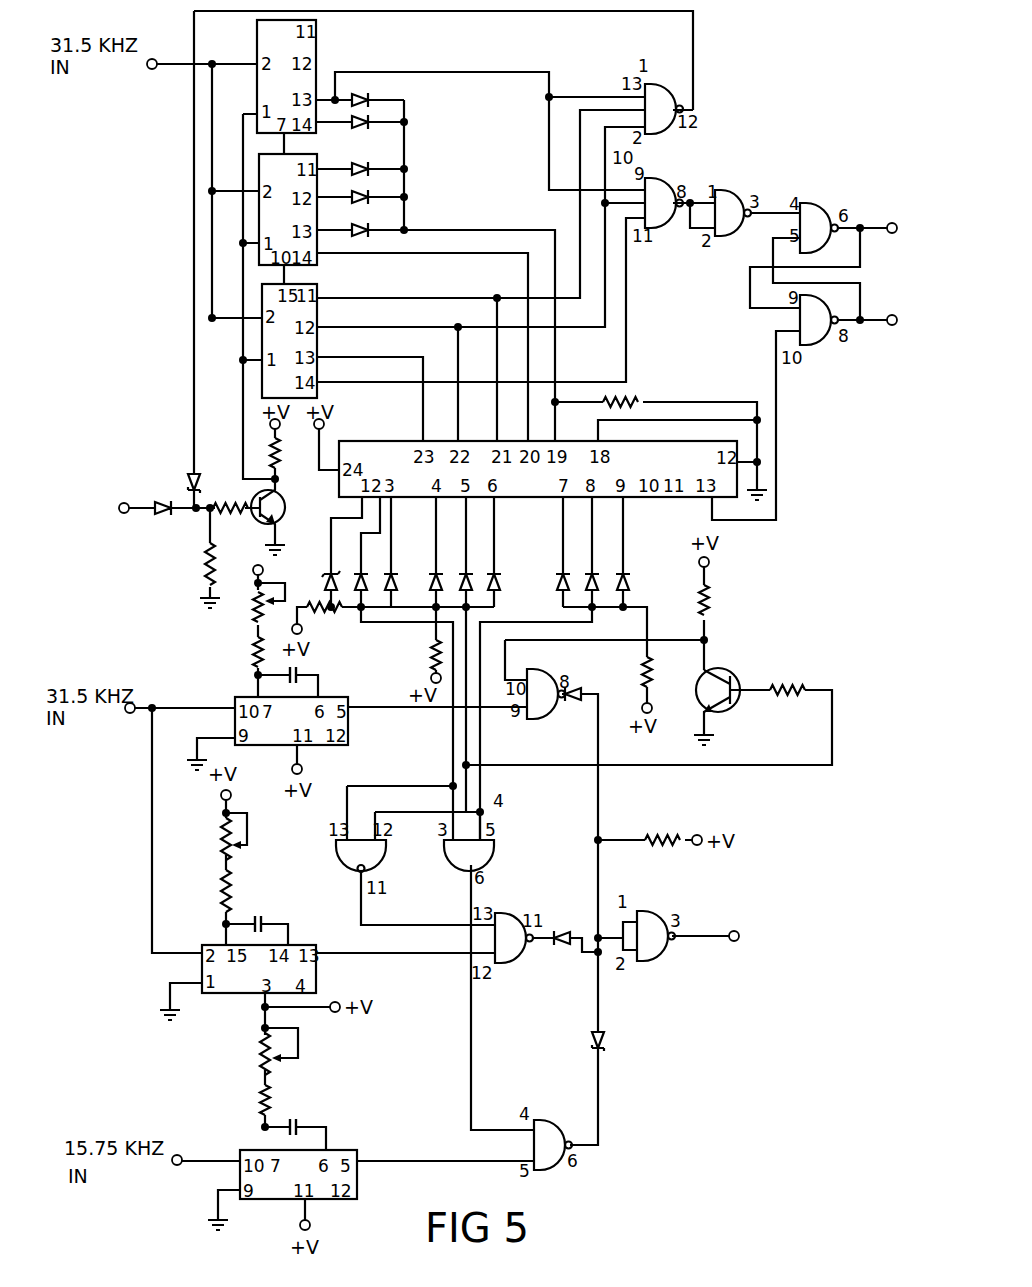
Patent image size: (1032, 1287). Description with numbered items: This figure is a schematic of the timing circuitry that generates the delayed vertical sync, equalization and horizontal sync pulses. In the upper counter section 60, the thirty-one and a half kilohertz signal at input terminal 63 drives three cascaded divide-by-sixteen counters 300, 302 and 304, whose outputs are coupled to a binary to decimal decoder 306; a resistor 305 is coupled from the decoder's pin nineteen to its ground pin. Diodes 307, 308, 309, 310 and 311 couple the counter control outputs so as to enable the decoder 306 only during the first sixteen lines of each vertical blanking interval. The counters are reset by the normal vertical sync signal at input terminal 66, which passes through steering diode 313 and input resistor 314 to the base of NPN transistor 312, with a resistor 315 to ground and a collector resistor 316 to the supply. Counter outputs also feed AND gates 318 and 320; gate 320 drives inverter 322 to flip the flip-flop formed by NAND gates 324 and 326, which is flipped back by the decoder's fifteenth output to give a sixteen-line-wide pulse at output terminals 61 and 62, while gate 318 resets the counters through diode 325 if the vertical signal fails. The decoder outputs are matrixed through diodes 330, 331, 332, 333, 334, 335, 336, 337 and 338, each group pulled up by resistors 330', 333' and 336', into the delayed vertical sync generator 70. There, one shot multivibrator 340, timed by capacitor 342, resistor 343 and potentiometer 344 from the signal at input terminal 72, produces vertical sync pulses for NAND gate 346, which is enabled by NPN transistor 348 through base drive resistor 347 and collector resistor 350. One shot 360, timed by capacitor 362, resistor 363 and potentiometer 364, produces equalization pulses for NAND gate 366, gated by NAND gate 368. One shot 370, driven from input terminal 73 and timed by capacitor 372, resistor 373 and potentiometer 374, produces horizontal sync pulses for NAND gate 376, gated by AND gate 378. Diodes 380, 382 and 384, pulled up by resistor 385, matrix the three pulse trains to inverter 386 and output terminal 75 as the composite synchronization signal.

The counter and decoder circuit 60 is at (166, 316).
The delayed vertical sync generator 70 is at (142, 662).
The output terminal 61 is at (892, 233).
The output terminal 62 is at (895, 310).
The input terminal 63 is at (150, 70).
The input terminal 66 is at (124, 503).
The input terminal 72 is at (128, 713).
The input terminal 73 is at (175, 1155).
The output terminal 75 is at (733, 931).
The divide-by-16 counter 300 is at (318, 50).
The divide-by-16 counter 302 is at (318, 257).
The divide-by-16 counter 304 is at (318, 340).
The resistor 305 is at (630, 400).
The binary to decimal decoder 306 is at (380, 448).
The diode 307 is at (365, 92).
The diode 308 is at (368, 128).
The diode 309 is at (368, 167).
The diode 310 is at (368, 194).
The diode 311 is at (368, 226).
The NPN transistor 312 is at (286, 505).
The steering diode 313 is at (158, 515).
The input resistor 314 is at (233, 512).
The resistor 315 is at (206, 566).
The resistor 316 is at (280, 450).
The AND gate 318 is at (662, 92).
The AND gate 320 is at (654, 213).
The inverter 322 is at (727, 228).
The NAND gate 324 is at (815, 215).
The diode 325 is at (190, 474).
The NAND gate 326 is at (818, 332).
The diode 330 is at (315, 587).
The resistor 330' is at (339, 627).
The diode 331 is at (362, 592).
The diode 332 is at (392, 592).
The diode 333 is at (419, 597).
The resistor 333' is at (413, 662).
The diode 334 is at (468, 588).
The diode 335 is at (496, 580).
The diode 336 is at (547, 609).
The resistor 336' is at (625, 669).
The diode 337 is at (594, 590).
The diode 338 is at (628, 586).
The one shot multivibrator 340 is at (348, 728).
The capacitor 342 is at (300, 680).
The resistor 343 is at (258, 652).
The potentiometer 344 is at (262, 602).
The NAND gate 346 is at (540, 680).
The base drive resistor 347 is at (792, 686).
The NPN transistor 348 is at (728, 705).
The resistor 350 is at (709, 606).
The one shot multivibrator 360 is at (298, 945).
The capacitor 362 is at (260, 922).
The resistor 363 is at (224, 888).
The potentiometer 364 is at (224, 846).
The NAND gate 366 is at (505, 925).
The NAND gate 368 is at (368, 855).
The one shot multivibrator 370 is at (338, 1152).
The capacitor 372 is at (296, 1124).
The resistor 373 is at (262, 1100).
The potentiometer 374 is at (262, 1050).
The NAND gate 376 is at (545, 1132).
The AND gate 378 is at (495, 852).
The diode 380 is at (575, 702).
The diode 382 is at (562, 946).
The diode 384 is at (606, 1036).
The resistor 385 is at (670, 838).
The inverter 386 is at (655, 912).